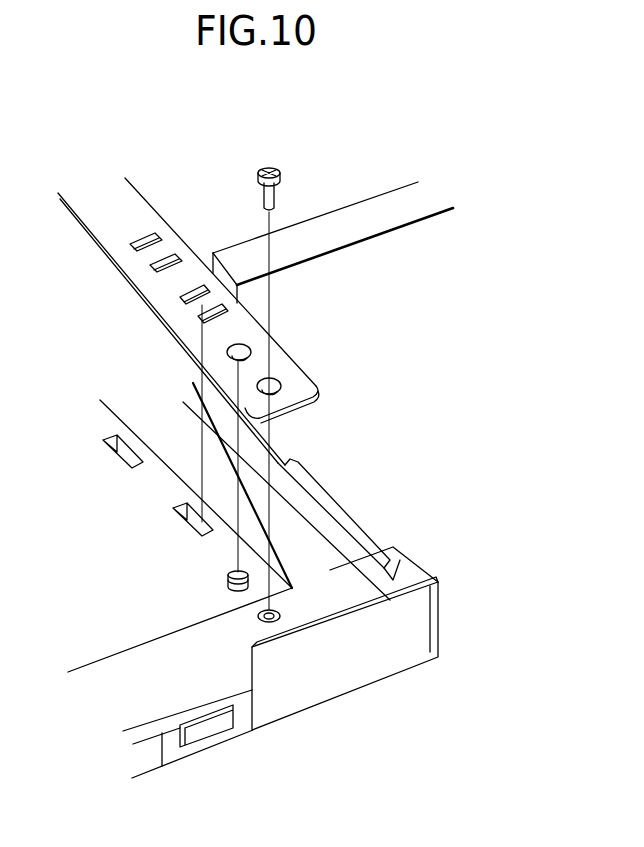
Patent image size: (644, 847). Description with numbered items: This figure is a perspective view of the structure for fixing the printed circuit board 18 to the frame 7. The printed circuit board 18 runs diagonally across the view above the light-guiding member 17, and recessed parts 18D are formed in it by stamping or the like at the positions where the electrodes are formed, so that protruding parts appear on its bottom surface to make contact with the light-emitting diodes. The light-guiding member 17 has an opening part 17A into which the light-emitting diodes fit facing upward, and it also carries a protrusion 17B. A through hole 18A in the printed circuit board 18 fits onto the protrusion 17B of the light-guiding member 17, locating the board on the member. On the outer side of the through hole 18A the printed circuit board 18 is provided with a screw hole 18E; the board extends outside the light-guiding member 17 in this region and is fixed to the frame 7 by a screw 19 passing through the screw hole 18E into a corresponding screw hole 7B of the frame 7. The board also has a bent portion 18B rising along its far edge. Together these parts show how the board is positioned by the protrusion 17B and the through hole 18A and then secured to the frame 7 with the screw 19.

The frame 7 is at (345, 690).
The nut / threaded hole 7B is at (281, 614).
The light-guiding member 17 is at (130, 581).
The opening part 17A is at (180, 508).
The protrusion 17B is at (249, 573).
The printed circuit board 18 is at (130, 206).
The through hole 18A is at (252, 352).
The bent portion 18B is at (331, 243).
The recessed part 18D is at (220, 312).
The screw hole 18E is at (284, 384).
The screw 19 is at (272, 167).